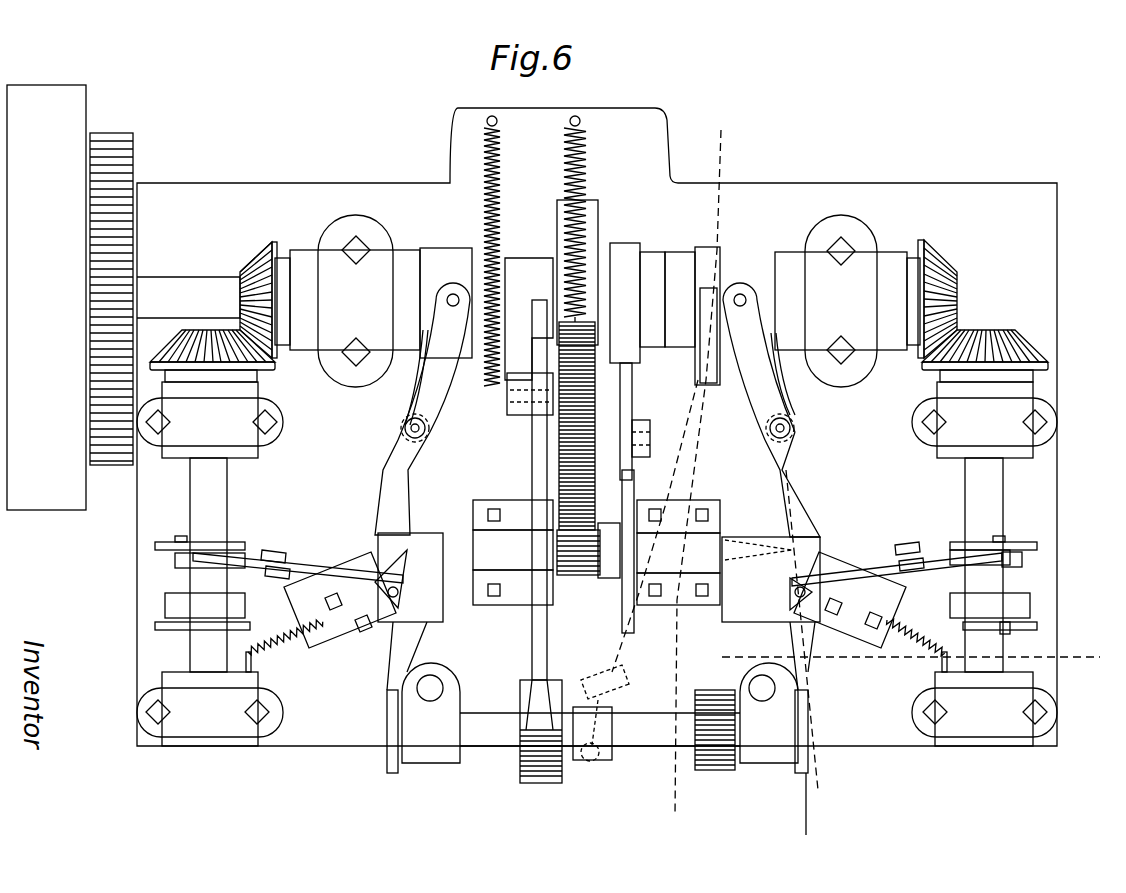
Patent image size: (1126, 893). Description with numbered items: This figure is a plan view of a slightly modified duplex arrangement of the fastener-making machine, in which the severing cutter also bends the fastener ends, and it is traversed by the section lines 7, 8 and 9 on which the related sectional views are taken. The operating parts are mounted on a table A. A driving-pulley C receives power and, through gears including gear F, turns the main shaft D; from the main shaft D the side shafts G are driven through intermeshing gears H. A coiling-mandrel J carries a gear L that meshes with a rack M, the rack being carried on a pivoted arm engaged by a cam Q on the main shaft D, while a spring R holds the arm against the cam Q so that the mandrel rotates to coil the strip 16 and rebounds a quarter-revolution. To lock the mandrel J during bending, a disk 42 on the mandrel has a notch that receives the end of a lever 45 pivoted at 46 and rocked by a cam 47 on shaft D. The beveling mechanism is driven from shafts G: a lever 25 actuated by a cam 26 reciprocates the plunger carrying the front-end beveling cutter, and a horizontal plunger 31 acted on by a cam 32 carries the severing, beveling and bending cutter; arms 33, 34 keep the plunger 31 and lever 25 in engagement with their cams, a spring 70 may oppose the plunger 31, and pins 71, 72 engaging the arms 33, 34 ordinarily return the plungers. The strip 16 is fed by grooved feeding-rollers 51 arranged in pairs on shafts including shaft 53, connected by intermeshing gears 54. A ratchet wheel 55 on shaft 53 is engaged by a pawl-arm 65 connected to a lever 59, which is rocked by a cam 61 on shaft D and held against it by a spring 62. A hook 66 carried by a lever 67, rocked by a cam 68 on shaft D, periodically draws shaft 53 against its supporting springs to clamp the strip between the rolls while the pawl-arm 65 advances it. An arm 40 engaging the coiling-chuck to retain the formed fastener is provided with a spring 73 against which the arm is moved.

The table A is at (218, 192).
The driving-pulley C is at (52, 513).
The gear F is at (113, 143).
The main shaft D is at (175, 290).
The intermeshing gears H is at (200, 340).
The shafts G is at (218, 508).
The coiling-mandrel J is at (455, 548).
The gear L is at (580, 563).
The rack M is at (558, 443).
The cam Q is at (598, 242).
The spring R is at (585, 180).
The section line 7 7 is at (692, 470).
The section line 8 8 is at (908, 658).
The section line 9 9 is at (716, 599).
The strip 16 is at (797, 770).
The lever 25 is at (862, 570).
The cam 26 is at (1022, 562).
The plunger 31 is at (905, 599).
The cam 32 is at (1033, 605).
The arm 33 is at (1040, 628).
The arm 34 is at (1035, 545).
The arm 40 is at (397, 452).
The disk 42 is at (620, 612).
The lever 45 is at (628, 406).
The pivot 46 is at (650, 440).
The cam 47 is at (632, 252).
The feeding-rollers 51 is at (386, 760).
The shaft 53 is at (498, 737).
The intermeshing gears 54 is at (715, 775).
The ratchet wheel 55 is at (553, 772).
The lever 59 is at (515, 405).
The cam 61 is at (520, 262).
The spring 62 is at (484, 206).
The pawl-arm 65 is at (537, 632).
The hook 66 is at (606, 765).
The lever 67 is at (700, 342).
The cam 68 is at (704, 262).
The spring 70 is at (920, 650).
The pin 71 is at (1008, 632).
The pin 72 is at (1003, 542).
The spring 73 is at (778, 388).